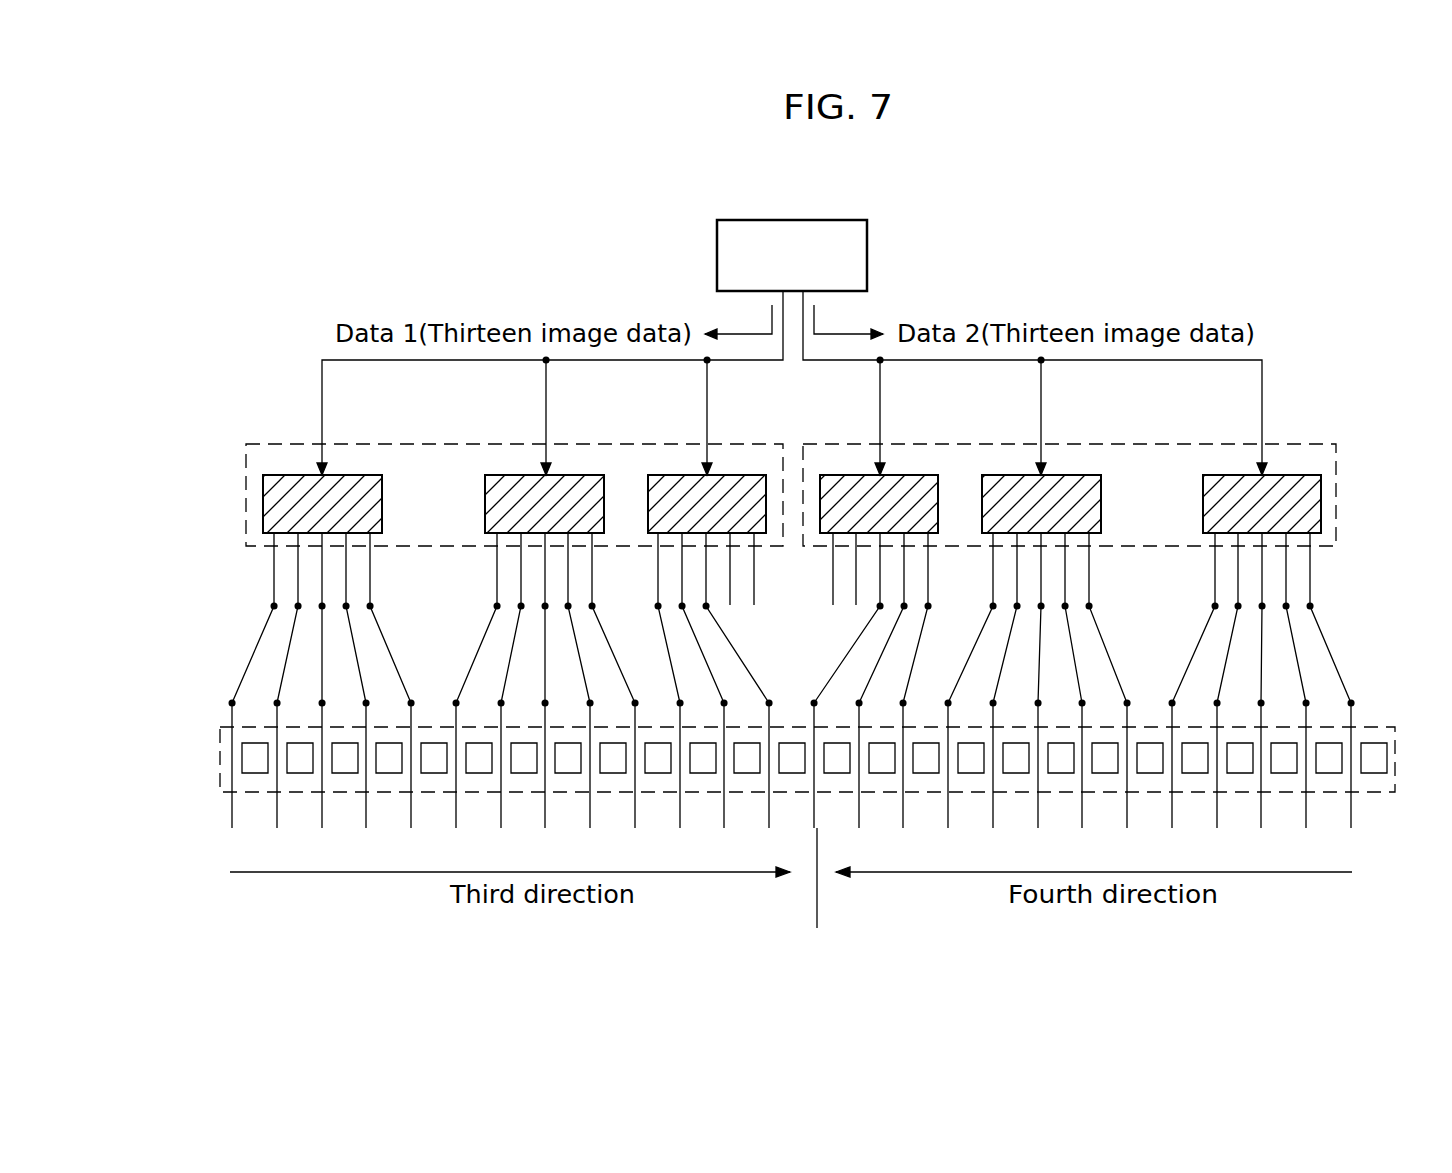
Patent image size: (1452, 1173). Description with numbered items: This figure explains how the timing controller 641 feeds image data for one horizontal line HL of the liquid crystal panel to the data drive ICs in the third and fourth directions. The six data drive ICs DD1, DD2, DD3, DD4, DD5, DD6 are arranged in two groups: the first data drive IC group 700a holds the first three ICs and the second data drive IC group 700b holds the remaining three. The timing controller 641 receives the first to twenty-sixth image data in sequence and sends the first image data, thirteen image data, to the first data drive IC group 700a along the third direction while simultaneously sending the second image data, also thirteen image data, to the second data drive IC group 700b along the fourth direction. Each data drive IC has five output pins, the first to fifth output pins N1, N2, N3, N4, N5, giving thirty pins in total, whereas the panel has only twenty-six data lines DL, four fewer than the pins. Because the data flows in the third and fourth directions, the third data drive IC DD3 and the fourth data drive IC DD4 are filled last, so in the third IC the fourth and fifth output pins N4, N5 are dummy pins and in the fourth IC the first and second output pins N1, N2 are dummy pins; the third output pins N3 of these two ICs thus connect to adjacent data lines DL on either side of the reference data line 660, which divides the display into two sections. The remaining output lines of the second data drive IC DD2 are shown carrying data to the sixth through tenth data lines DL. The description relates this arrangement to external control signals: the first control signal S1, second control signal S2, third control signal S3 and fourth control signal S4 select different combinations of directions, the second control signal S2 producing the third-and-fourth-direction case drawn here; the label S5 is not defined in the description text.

The timing controller 641 is at (867, 242).
The reference data line 660 is at (817, 905).
The first data drive IC group 700a is at (246, 478).
The second data drive IC group 700b is at (1336, 478).
The first data drive IC DD1 is at (370, 475).
The second data drive IC DD2 is at (593, 475).
The third data drive IC DD3 is at (752, 475).
The fourth data drive IC DD4 is at (924, 475).
The fifth data drive IC DD5 is at (1086, 475).
The sixth data drive IC DD6 is at (1306, 475).
The first output pin N1 is at (274, 560).
The second output pin N2 is at (298, 575).
The third output pin N3 is at (322, 590).
The fourth output pin N4 is at (346, 576).
The fifth output pin N5 is at (371, 560).
The first control signal S1 is at (487, 627).
The second control signal S2 is at (510, 648).
The third control signal S3 is at (544, 673).
The fourth control signal S4 is at (582, 660).
The fifth output line of second data driving chip S5 is at (602, 630).
The horizontal line HL is at (220, 762).
The data lines DL is at (232, 811).